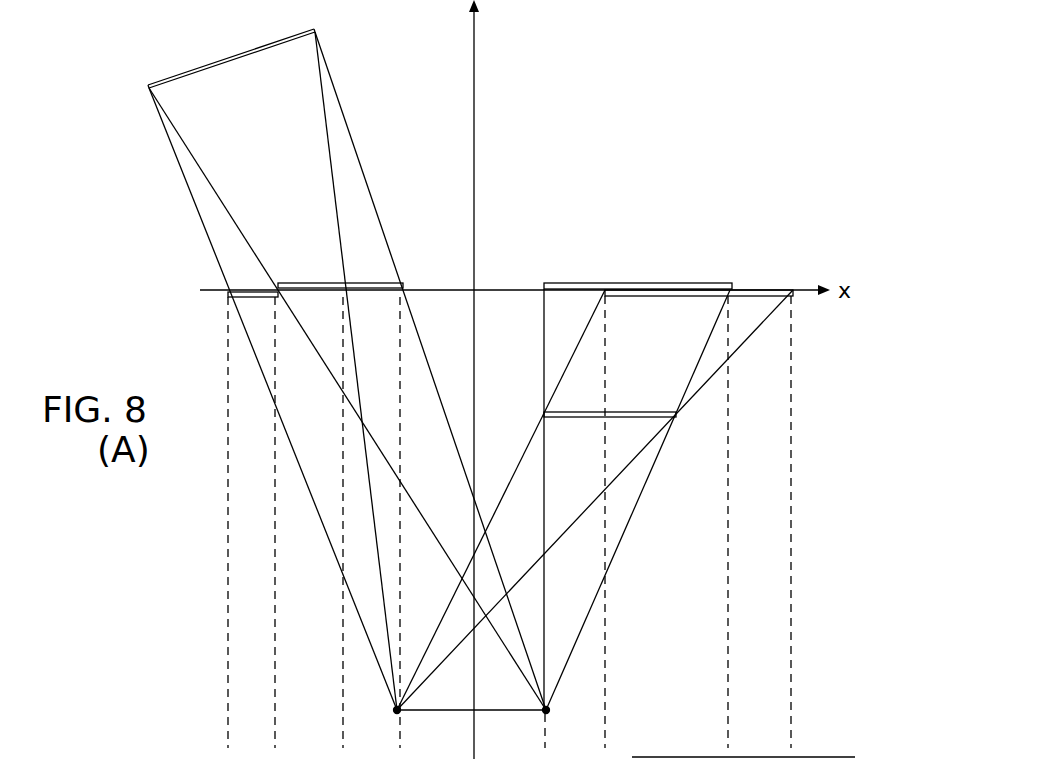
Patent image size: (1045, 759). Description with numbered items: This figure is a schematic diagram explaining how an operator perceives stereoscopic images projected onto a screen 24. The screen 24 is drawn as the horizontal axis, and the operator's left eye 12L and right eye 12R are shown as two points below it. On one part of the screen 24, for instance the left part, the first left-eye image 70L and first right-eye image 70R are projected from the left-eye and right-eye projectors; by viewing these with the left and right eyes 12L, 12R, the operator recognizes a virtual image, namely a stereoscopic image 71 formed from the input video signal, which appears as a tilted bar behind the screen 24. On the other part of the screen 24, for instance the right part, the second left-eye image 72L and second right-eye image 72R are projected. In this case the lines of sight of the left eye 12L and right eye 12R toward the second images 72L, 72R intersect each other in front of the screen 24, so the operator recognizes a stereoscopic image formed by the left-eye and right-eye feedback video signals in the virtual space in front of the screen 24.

The stereoscopic image 71 is at (226, 62).
The first left-eye image 70L is at (265, 291).
The first right-eye image 70R is at (332, 283).
The second right-eye image 72R is at (566, 283).
The second left-eye image 72L is at (757, 289).
The screen 24 is at (516, 289).
The left eye 12L is at (393, 712).
The right eye 12R is at (550, 712).